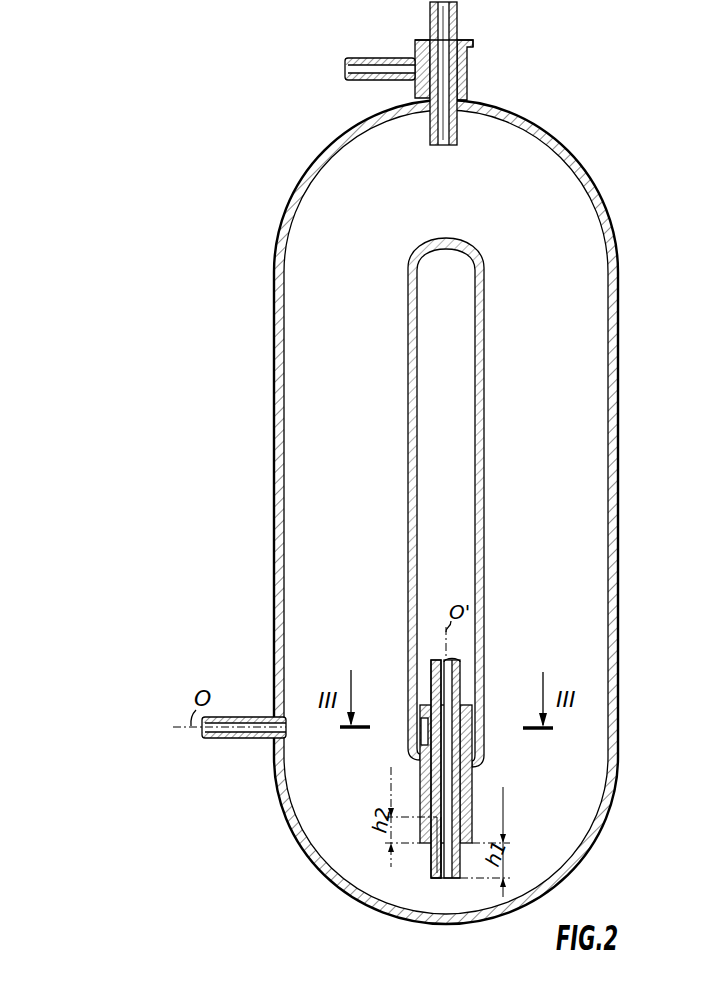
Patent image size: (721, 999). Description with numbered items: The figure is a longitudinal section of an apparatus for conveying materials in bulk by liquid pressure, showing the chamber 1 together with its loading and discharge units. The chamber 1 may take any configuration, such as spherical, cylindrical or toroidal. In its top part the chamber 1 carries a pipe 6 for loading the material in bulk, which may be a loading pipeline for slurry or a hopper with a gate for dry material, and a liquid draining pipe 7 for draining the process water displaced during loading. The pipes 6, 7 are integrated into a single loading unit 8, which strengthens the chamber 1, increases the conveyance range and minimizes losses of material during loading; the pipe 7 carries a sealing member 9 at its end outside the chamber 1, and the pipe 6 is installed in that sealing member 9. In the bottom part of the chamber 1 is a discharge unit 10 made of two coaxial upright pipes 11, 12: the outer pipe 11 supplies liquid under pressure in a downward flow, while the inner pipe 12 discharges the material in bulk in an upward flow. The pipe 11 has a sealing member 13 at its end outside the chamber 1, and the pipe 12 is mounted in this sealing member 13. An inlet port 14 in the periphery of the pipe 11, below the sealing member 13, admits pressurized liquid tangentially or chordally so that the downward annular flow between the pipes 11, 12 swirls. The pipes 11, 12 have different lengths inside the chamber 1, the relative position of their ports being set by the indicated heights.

The chamber 1 is at (618, 244).
The pipe for loading the material in bulk 6 is at (458, 18).
The liquid draining pipe 7 is at (468, 82).
The loading unit 8 is at (486, 58).
The sealing member 9 is at (428, 40).
The discharge unit 10 is at (488, 698).
The pipe for liquid supply under pressure in a downward flow 11 is at (472, 778).
The pipe for discharging the material in bulk in an upward flow 12 is at (433, 866).
The sealing member 13 is at (428, 707).
The inlet port 14 is at (420, 737).